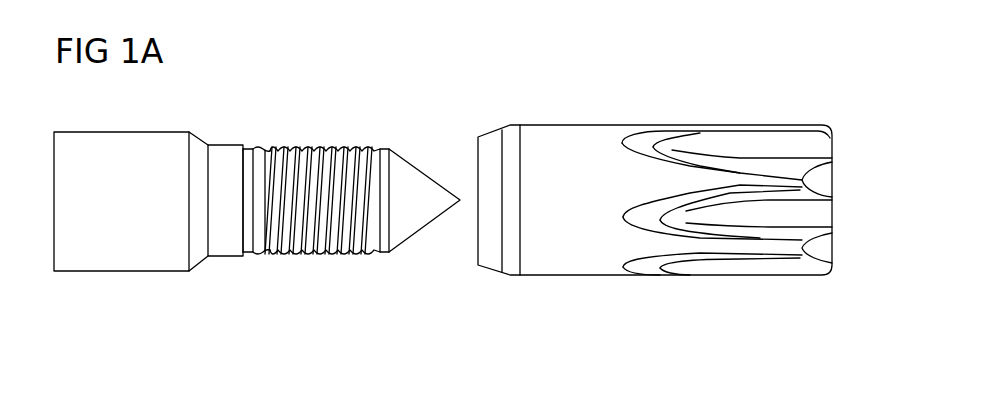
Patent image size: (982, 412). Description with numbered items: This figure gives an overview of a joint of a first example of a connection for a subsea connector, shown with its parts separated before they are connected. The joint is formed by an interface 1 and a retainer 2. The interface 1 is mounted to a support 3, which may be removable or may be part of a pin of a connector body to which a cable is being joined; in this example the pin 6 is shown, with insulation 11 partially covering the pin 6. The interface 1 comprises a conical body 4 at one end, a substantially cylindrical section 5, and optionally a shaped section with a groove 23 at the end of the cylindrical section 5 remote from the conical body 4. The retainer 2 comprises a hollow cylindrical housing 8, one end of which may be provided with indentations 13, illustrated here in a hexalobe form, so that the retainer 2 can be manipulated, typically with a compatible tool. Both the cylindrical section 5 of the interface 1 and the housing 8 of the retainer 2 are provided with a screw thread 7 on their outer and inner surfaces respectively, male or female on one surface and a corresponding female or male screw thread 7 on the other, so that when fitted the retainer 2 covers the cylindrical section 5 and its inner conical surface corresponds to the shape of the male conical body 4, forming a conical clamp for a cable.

The interface 1 is at (257, 218).
The retainer 2 is at (655, 227).
The support 3 is at (122, 277).
The conical body 4 is at (410, 168).
The cylindrical section 5 is at (338, 146).
The pin 6 is at (227, 262).
The screw thread 7 is at (313, 258).
The hollow cylindrical housing 8 is at (575, 140).
The insulation 11 is at (210, 143).
The indentations 13 is at (777, 140).
The groove 23 is at (258, 146).